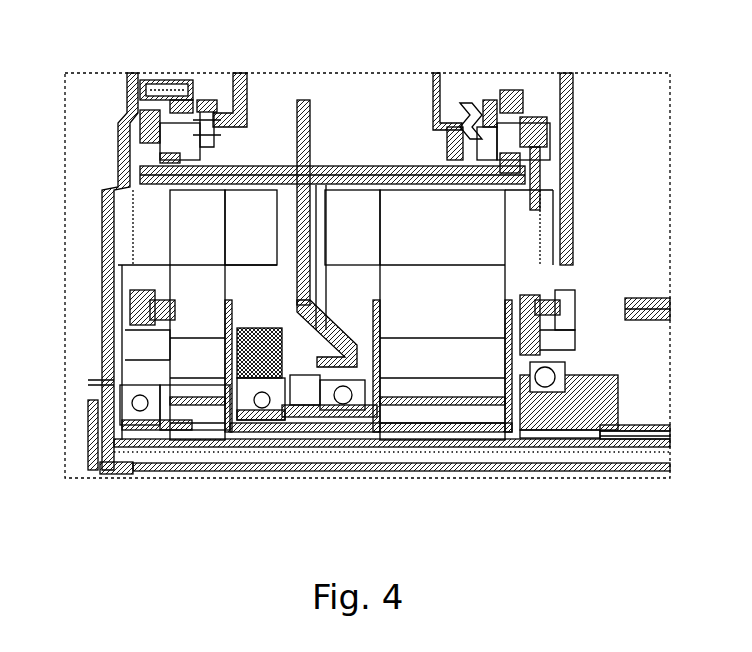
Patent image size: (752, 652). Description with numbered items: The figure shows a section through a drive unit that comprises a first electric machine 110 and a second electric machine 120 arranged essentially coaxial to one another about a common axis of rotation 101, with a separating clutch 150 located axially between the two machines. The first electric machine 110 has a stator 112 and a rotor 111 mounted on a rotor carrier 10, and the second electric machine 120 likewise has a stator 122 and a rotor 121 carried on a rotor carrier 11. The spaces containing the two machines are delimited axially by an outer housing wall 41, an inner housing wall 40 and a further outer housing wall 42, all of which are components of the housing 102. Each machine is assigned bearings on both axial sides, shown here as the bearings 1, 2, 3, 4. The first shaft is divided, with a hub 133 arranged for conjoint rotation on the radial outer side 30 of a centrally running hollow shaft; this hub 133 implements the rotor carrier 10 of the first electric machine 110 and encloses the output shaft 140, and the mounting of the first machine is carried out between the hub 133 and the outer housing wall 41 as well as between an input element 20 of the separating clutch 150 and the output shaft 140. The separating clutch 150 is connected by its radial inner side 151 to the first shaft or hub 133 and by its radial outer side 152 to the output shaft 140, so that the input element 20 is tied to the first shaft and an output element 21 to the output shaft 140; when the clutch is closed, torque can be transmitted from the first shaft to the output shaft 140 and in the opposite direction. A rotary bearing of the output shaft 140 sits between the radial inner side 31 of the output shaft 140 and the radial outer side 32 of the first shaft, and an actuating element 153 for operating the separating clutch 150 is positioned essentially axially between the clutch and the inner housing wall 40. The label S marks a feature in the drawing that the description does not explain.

The bearing 1 is at (108, 470).
The bearing 2 is at (273, 430).
The bearing 3 is at (353, 430).
The bearing 4 is at (540, 430).
The rotor carrier 10 is at (193, 430).
The rotor carrier 11 is at (619, 385).
The input element 20 is at (252, 464).
The output element 21 is at (303, 233).
The radial outer side 30 is at (597, 430).
The radial inner side 31 is at (600, 425).
The radial outer side 32 is at (560, 430).
The inner housing wall 40 is at (390, 200).
The outer housing wall 41 is at (113, 163).
The outer housing wall 42 is at (560, 322).
The axis of rotation 101 is at (490, 457).
The housing 102 is at (117, 147).
The first electric machine 110 is at (183, 283).
The rotor 111 is at (185, 385).
The stator 112 is at (180, 237).
The second electric machine 120 is at (435, 277).
The rotor 121 is at (470, 350).
The stator 122 is at (343, 283).
The hub 133 is at (150, 430).
The output shaft 140 is at (612, 410).
The separating clutch 150 is at (252, 430).
The radial inner side 151 is at (257, 430).
The radial outer side 152 is at (250, 290).
The actuating element 153 is at (310, 430).
The sealing gap S is at (640, 440).